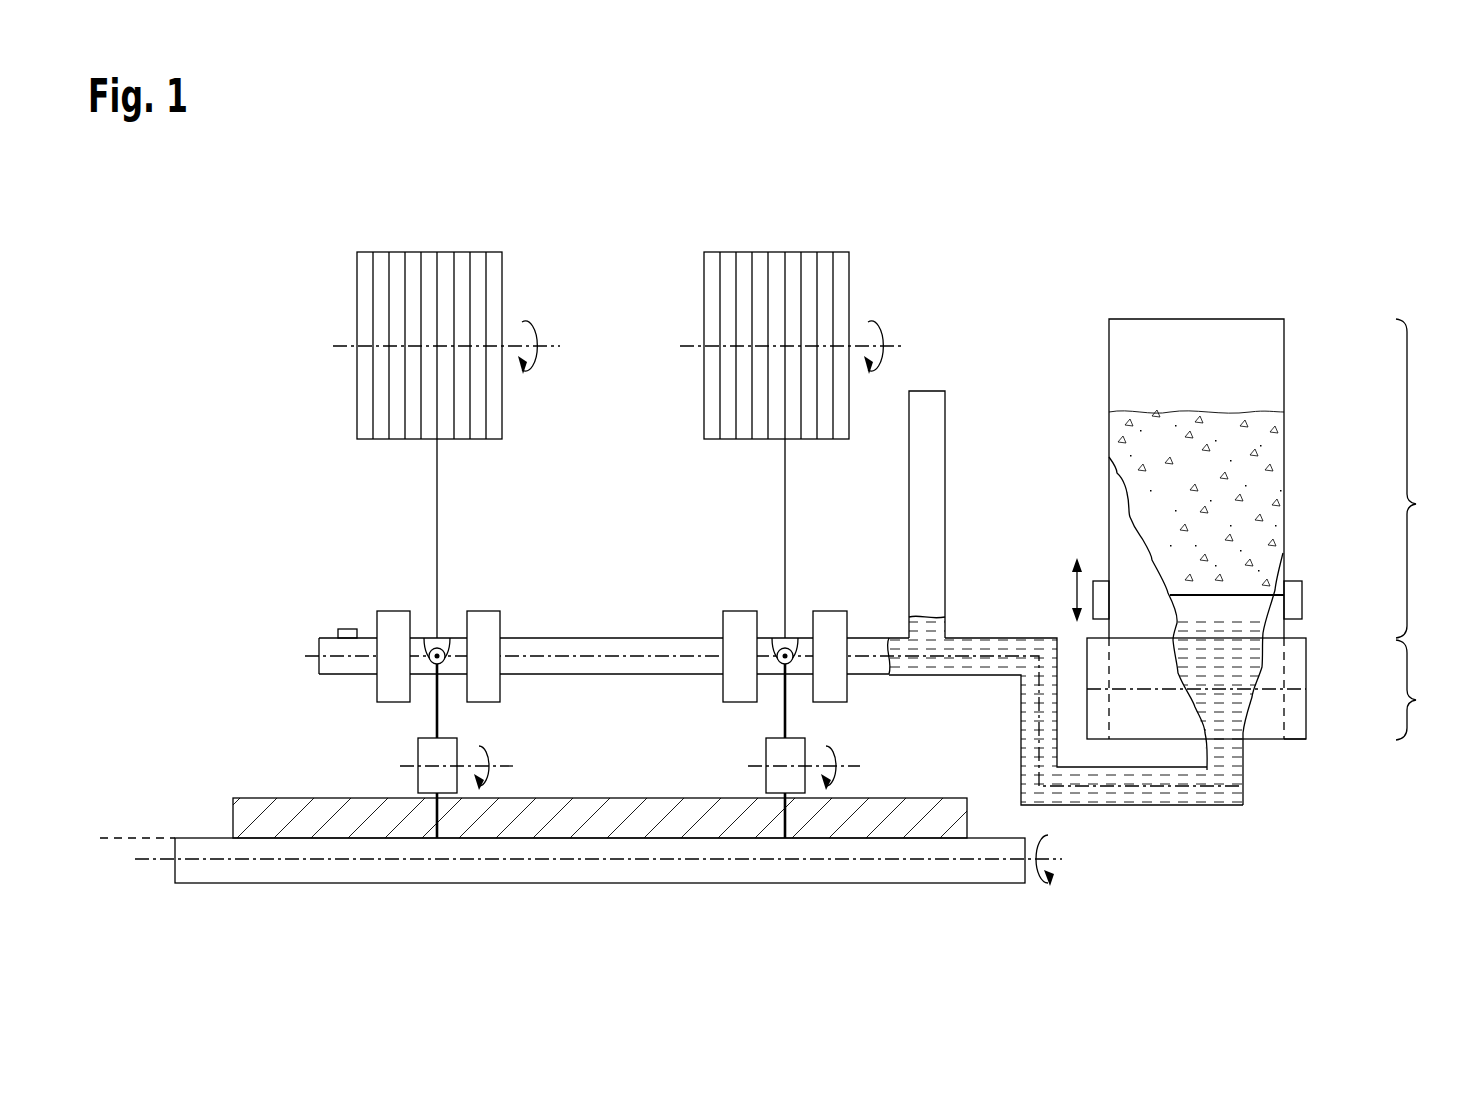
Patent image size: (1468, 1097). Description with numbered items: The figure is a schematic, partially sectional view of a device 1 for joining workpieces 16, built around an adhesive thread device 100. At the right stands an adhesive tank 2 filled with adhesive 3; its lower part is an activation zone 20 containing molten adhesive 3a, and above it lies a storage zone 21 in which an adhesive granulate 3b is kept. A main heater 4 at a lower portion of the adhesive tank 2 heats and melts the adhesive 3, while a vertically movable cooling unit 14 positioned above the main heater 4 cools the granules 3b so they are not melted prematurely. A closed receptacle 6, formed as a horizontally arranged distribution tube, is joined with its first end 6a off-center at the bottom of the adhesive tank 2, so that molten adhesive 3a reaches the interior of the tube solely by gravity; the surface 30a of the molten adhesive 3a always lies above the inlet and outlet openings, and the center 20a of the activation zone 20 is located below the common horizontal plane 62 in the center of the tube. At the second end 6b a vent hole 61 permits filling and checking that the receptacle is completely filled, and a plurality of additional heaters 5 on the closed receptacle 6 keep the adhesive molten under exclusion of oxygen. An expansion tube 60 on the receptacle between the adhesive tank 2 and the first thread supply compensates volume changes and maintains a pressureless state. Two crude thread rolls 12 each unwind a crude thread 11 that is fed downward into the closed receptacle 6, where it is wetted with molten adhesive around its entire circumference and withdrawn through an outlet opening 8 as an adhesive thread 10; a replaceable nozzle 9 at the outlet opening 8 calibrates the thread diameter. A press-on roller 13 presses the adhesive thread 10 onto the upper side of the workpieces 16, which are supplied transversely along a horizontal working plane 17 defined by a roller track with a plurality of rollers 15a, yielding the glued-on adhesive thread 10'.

The device for joining workpieces 1 is at (212, 222).
The adhesive thread device 100 is at (922, 258).
The crude thread roll 12 is at (462, 252).
The crude thread 11 is at (440, 484).
The closed receptacle 6 is at (612, 638).
The first end 6a is at (1228, 806).
The second end 6b is at (345, 676).
The vent hole 61 is at (345, 629).
The common horizontal plane 62 is at (668, 656).
The additional heaters 5 is at (393, 611).
The outlet opening 8 is at (432, 650).
The nozzle 9 is at (448, 640).
The adhesive thread 10 is at (565, 706).
The glued-on adhesive thread 10' is at (615, 864).
The press-on roller 13 is at (418, 760).
The workpieces 16 is at (872, 822).
The rollers 15a is at (955, 862).
The working plane 17 is at (138, 836).
The expansion tube 60 is at (945, 456).
The adhesive tank 2 is at (1218, 308).
The adhesive 3 is at (1246, 455).
The molten adhesive 3a is at (1232, 700).
The adhesive granulate 3b is at (1222, 502).
The surface of the molten adhesive 30a is at (1224, 644).
The cooling unit 14 is at (1302, 604).
The activation zone 20 is at (1273, 730).
The center of the activation zone 20a is at (1306, 689).
The storage zone 21 is at (1428, 478).
The main heater 4 is at (1306, 738).